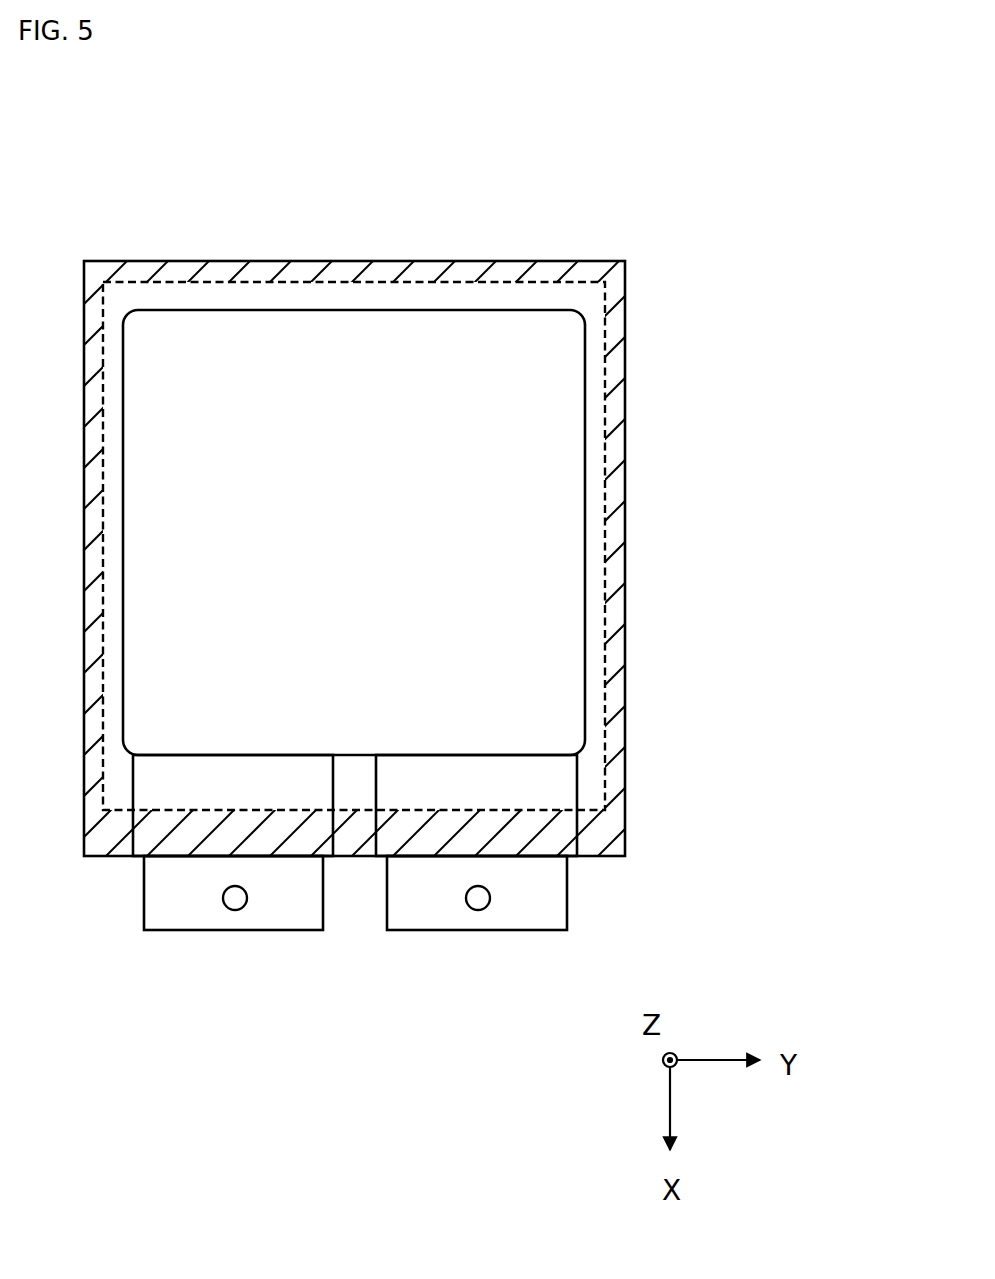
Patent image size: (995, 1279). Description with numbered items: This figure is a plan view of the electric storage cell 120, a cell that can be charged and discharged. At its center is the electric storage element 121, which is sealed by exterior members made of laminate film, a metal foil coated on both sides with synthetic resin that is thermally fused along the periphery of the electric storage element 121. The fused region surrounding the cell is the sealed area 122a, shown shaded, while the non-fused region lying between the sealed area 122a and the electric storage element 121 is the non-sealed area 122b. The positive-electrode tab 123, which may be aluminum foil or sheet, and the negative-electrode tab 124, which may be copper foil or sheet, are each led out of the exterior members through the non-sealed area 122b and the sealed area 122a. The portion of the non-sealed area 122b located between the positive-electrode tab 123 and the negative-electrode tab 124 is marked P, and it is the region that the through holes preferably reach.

The electric storage cell 120 is at (675, 188).
The electric storage element 121 is at (350, 335).
The sealed area 122a is at (613, 450).
The non-sealed area 122b is at (590, 560).
The positive-electrode tab 123 is at (478, 917).
The negative-electrode tab 124 is at (229, 917).
The non-sealed area between the tabs P is at (359, 795).